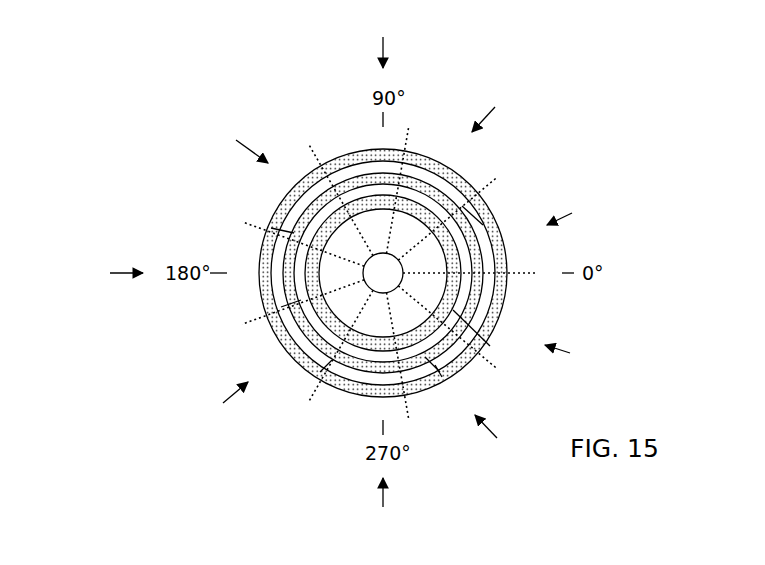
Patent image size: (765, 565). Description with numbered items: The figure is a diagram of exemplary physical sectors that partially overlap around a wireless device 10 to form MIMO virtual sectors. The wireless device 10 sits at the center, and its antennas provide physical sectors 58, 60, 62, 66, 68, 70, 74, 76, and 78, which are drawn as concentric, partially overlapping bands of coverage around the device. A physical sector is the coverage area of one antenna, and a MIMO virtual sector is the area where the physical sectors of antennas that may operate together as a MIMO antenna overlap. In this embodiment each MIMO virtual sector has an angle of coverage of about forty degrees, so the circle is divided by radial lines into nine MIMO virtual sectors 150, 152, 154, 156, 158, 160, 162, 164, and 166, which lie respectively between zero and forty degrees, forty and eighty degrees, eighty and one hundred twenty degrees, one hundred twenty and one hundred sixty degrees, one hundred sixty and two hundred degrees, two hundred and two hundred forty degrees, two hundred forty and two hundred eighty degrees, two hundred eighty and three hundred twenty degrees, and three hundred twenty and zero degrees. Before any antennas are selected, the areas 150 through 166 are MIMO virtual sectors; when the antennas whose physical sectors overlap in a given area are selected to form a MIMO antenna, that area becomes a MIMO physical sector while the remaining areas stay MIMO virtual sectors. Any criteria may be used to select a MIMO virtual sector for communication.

The wireless device 10 is at (383, 273).
The physical sector 58 is at (465, 250).
The physical sector 60 is at (443, 183).
The physical sector 62 is at (368, 148).
The physical sector 66 is at (300, 208).
The physical sector 68 is at (293, 254).
The physical sector 70 is at (300, 348).
The physical sector 74 is at (484, 338).
The physical sector 76 is at (445, 380).
The physical sector 78 is at (508, 290).
The MIMO virtual sector 150 is at (583, 209).
The MIMO virtual sector 152 is at (496, 108).
The MIMO virtual sector 154 is at (382, 36).
The MIMO virtual sector 156 is at (237, 139).
The MIMO virtual sector 158 is at (103, 272).
The MIMO virtual sector 160 is at (216, 405).
The MIMO virtual sector 162 is at (382, 508).
The MIMO virtual sector 164 is at (504, 438).
The MIMO virtual sector 166 is at (579, 359).